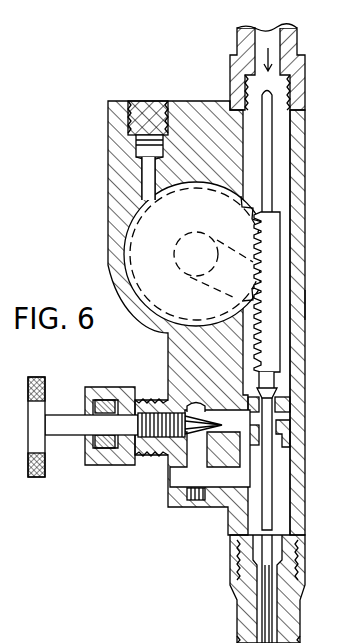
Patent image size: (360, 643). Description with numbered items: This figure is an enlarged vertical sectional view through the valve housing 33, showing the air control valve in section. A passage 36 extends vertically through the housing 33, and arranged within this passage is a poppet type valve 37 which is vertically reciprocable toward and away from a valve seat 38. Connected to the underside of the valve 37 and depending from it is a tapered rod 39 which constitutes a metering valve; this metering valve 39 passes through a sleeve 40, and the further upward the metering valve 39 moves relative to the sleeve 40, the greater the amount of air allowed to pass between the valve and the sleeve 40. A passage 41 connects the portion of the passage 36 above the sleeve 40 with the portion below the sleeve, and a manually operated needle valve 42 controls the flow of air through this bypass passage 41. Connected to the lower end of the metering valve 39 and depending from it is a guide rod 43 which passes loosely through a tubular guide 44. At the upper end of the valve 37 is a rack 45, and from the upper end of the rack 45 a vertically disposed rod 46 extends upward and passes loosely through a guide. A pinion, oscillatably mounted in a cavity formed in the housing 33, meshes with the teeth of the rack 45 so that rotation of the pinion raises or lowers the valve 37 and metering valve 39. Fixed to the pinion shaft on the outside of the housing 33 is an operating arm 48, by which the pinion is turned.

The housing 33 is at (305, 378).
The passage 36 is at (293, 210).
The poppet type valve 37 is at (279, 393).
The valve seat 38 is at (284, 402).
The tapered rod 39 is at (268, 474).
The sleeve 40 is at (279, 432).
The passage 41 is at (195, 478).
The needle valve 42 is at (170, 398).
The guide rod 43 is at (272, 612).
The tubular guide 44 is at (278, 543).
The rack 45 is at (273, 361).
The rod 46 is at (270, 160).
The operating arm 48 is at (303, 306).